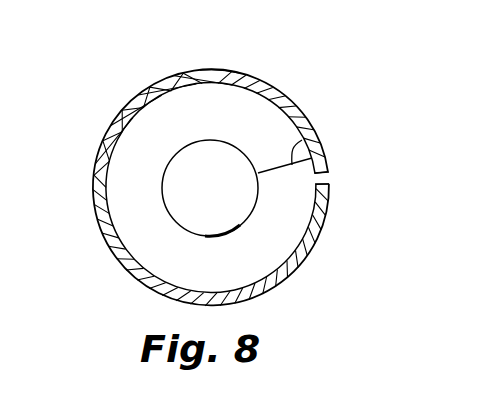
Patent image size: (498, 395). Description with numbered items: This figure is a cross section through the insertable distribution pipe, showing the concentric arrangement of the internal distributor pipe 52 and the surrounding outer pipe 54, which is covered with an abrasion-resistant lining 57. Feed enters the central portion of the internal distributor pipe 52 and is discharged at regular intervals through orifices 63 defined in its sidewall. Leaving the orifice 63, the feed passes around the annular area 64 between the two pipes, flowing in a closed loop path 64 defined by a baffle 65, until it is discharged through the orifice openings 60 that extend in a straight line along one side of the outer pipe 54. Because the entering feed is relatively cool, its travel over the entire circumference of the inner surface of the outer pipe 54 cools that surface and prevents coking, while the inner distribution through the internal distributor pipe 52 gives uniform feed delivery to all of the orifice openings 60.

The internal distributor pipe 52 is at (222, 238).
The outer pipe 54 is at (322, 228).
The abrasion-resistant lining 57 is at (229, 76).
The orifice openings 60 is at (333, 178).
The orifices 63 is at (256, 159).
The annular area 64 is at (118, 166).
The baffle 65 is at (312, 131).